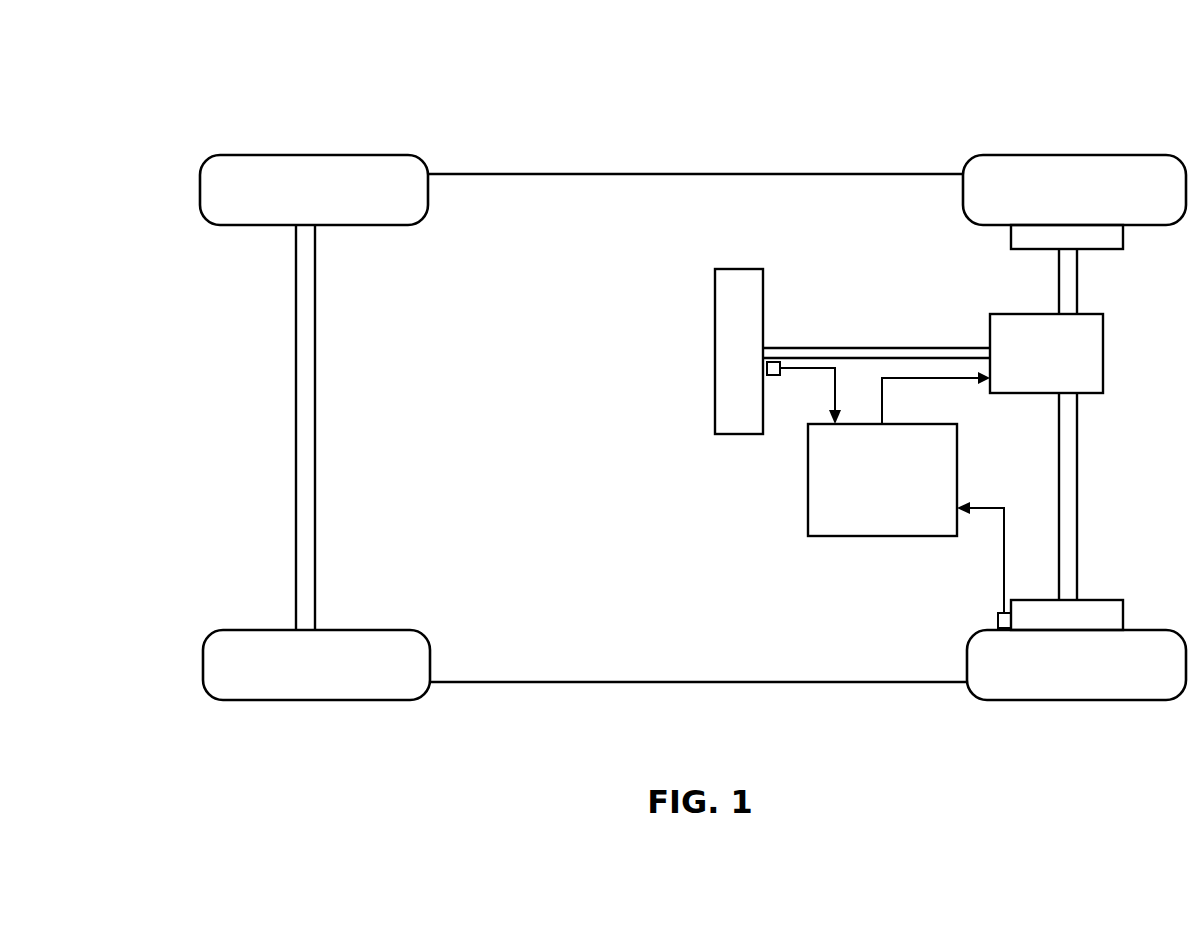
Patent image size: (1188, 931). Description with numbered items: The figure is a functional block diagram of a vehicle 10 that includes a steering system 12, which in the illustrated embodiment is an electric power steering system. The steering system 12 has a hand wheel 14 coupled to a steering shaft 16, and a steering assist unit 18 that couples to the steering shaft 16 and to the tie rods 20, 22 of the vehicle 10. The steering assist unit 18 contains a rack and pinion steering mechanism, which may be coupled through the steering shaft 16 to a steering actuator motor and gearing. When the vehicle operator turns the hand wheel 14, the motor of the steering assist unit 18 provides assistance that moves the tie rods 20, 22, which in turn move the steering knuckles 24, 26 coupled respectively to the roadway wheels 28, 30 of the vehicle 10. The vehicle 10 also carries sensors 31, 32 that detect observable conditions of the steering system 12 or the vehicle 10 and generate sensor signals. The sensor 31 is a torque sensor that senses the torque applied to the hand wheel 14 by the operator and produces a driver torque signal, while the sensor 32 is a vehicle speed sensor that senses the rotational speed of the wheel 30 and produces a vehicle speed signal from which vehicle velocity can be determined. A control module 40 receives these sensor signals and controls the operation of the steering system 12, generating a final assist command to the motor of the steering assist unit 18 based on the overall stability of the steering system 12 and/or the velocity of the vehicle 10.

The vehicle 10 is at (729, 68).
The steering system 12 is at (839, 237).
The hand wheel 14 is at (738, 269).
The steering shaft 16 is at (848, 348).
The steering assist unit 18 is at (1103, 350).
The tie rod 20 is at (1077, 293).
The tie rod 22 is at (1078, 470).
The steering knuckle 24 is at (1010, 240).
The steering knuckle 26 is at (1041, 598).
The roadway wheel 28 is at (1111, 155).
The roadway wheel 30 is at (1131, 628).
The torque sensor 31 is at (772, 378).
The vehicle speed sensor 32 is at (997, 618).
The control module 40 is at (957, 478).